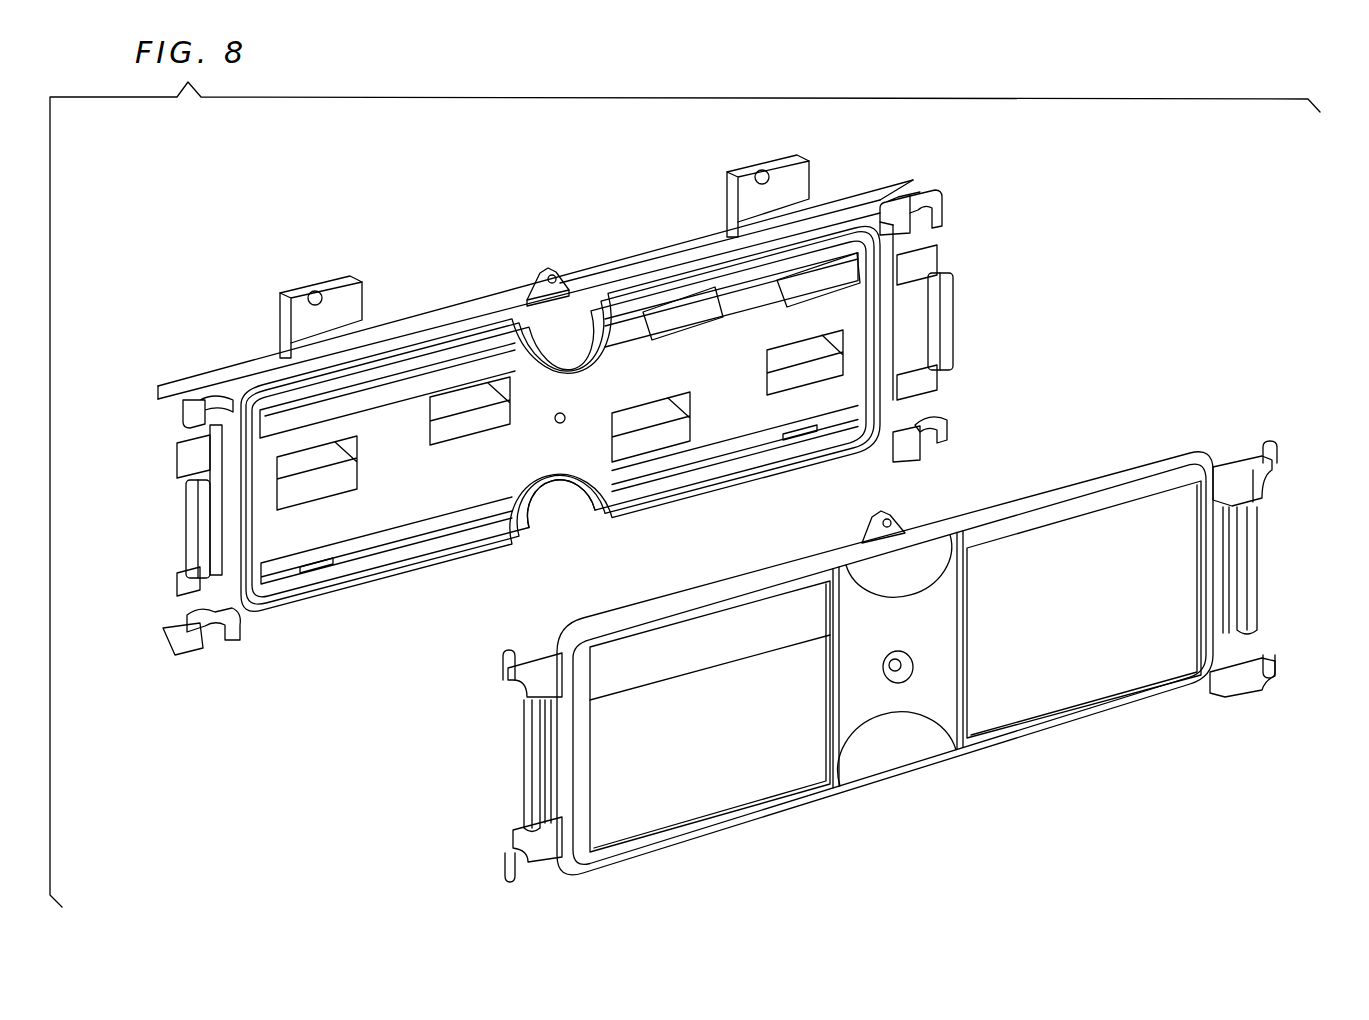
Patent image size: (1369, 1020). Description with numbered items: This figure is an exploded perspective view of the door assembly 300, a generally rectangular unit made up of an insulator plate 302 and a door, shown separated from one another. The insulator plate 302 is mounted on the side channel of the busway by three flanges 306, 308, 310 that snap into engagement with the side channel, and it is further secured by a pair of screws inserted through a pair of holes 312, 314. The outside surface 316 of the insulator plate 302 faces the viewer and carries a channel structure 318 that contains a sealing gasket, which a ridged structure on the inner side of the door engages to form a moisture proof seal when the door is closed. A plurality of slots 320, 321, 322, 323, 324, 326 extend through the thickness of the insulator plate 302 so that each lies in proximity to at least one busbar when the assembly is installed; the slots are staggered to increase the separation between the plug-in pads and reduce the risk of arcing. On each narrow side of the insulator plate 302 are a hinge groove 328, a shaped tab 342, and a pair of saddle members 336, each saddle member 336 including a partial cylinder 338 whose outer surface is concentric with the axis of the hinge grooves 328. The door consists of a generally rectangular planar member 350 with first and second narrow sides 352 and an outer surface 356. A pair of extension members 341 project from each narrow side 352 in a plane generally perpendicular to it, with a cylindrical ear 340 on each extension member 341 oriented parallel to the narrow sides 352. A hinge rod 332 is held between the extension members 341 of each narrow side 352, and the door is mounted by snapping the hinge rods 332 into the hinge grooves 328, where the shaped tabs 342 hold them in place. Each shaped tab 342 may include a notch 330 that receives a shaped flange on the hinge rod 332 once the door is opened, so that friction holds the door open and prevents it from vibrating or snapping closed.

The door assembly 300 is at (1135, 250).
The insulator plate 302 is at (448, 307).
The flange 306 is at (320, 568).
The flange 308 is at (548, 502).
The flange 310 is at (798, 435).
The hole 312 is at (314, 295).
The hole 314 is at (763, 173).
The outside surface 316 is at (407, 513).
The channel structure 318 is at (363, 570).
The slot 320 is at (487, 385).
The slot 321 is at (330, 457).
The slot 322 is at (775, 387).
The slot 323 is at (653, 442).
The slot 324 is at (678, 323).
The slot 326 is at (813, 282).
The hinge groove 328 is at (207, 453).
The notch 330 is at (183, 518).
The hinge rod 332 is at (532, 783).
The saddle member 336 is at (188, 380).
The partial cylinder 338 is at (208, 402).
The cylindrical ear 340 is at (508, 660).
The extension member 341 is at (537, 660).
The shaped tab 342 is at (180, 527).
The planar member 350 is at (863, 793).
The narrow side 352 is at (557, 712).
The outer surface 356 is at (1135, 680).